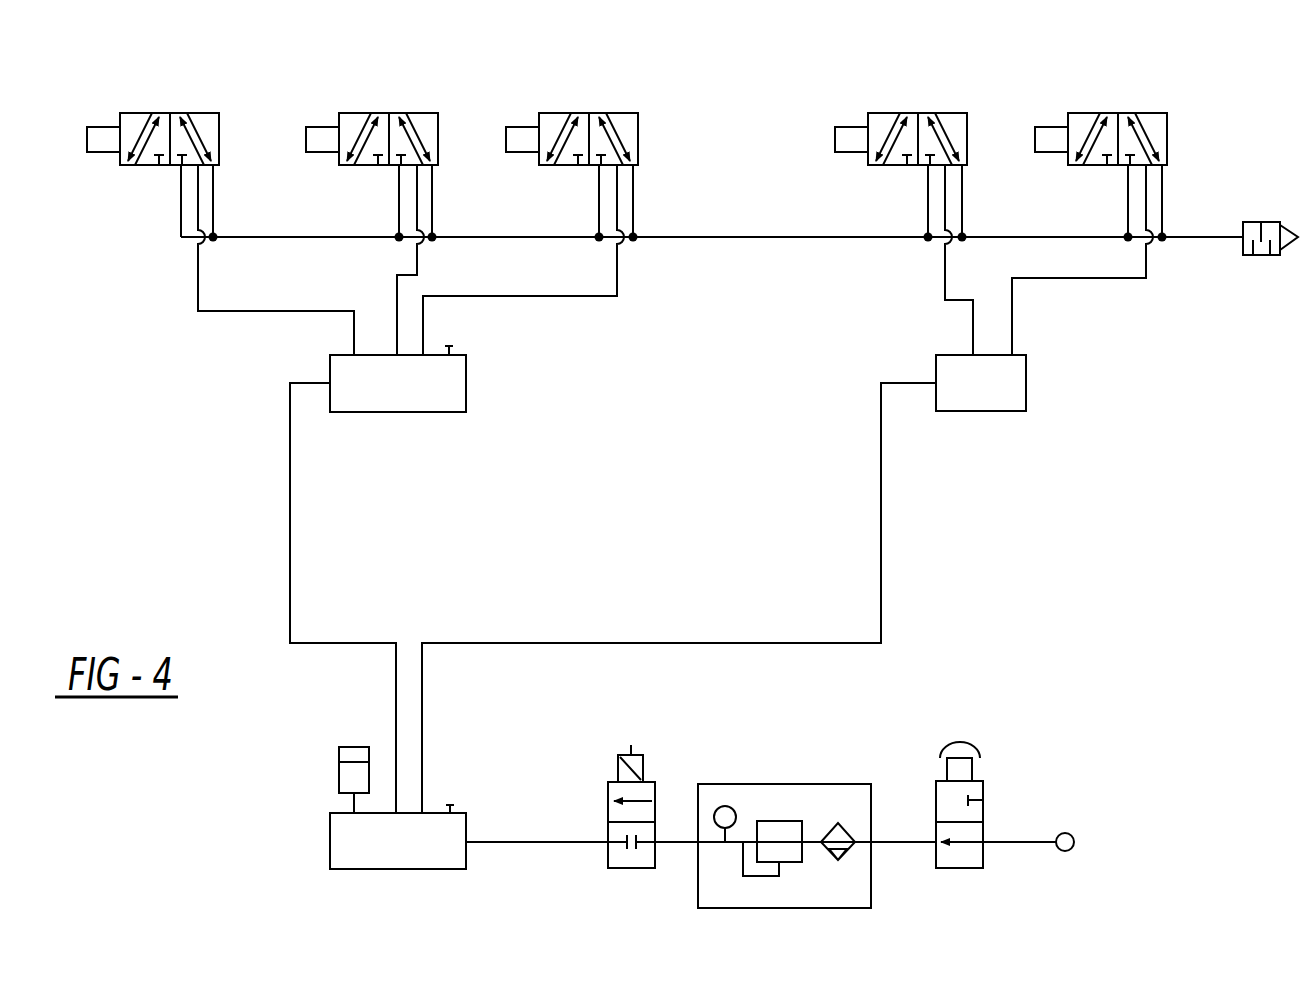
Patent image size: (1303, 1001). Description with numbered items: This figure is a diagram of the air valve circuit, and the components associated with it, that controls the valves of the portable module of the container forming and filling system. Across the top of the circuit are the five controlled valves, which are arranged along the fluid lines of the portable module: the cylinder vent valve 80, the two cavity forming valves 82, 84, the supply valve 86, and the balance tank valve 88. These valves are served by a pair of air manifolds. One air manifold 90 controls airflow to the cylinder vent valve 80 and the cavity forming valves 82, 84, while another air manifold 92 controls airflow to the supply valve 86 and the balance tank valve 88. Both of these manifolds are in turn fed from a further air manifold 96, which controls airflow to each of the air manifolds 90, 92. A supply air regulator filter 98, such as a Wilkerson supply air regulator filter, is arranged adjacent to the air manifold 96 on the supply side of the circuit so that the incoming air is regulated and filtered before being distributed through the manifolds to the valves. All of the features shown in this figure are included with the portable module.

The cylinder vent valve 80 is at (347, 112).
The cavity forming valve 82 is at (208, 112).
The cavity forming valve 84 is at (628, 112).
The supply valve 86 is at (1150, 112).
The balance tank valve 88 is at (881, 112).
The air manifold 90 is at (402, 400).
The air manifold 92 is at (998, 399).
The air manifold 96 is at (358, 837).
The supply air regulator filter 98 is at (788, 797).